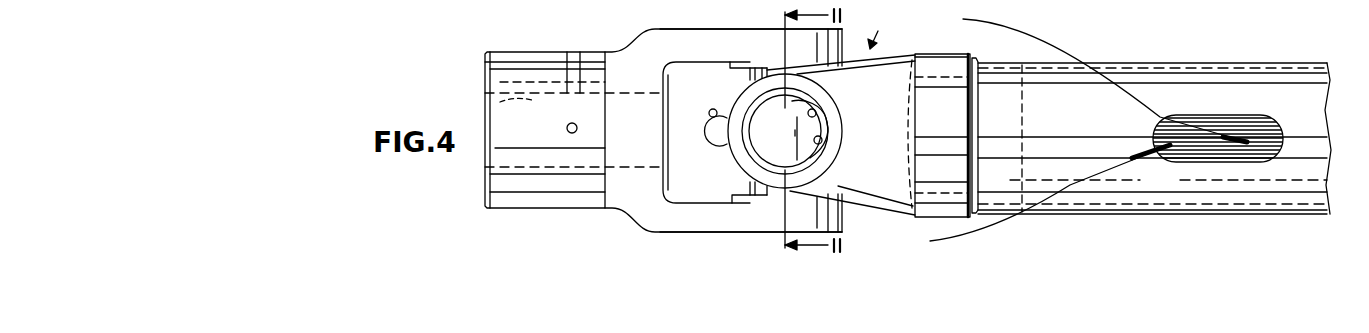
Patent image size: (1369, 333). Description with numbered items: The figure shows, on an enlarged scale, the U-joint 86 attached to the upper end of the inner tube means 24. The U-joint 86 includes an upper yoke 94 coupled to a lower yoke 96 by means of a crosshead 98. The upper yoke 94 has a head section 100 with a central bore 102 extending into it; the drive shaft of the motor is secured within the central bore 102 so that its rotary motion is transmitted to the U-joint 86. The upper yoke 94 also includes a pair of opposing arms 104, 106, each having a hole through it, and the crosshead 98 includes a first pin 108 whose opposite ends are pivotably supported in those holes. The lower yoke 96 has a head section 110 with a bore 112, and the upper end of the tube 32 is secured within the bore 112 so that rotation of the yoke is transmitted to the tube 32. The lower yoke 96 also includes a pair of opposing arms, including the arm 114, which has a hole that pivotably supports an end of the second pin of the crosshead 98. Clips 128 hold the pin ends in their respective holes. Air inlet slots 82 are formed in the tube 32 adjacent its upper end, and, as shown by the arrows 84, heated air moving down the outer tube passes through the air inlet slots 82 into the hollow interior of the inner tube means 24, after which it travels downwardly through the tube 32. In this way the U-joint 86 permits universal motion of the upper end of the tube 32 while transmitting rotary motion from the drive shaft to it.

The inner tube means 24 is at (1221, 66).
The tube 32 is at (1290, 78).
The air inlet slots 82 is at (1245, 125).
The arrows 84 is at (1077, 62).
The U-joint 86 is at (880, 30).
The upper yoke 94 is at (626, 218).
The lower yoke 96 is at (902, 59).
The crosshead 98 is at (788, 143).
The head section 100 is at (528, 60).
The central bore 102 is at (500, 102).
The arm 104 is at (741, 37).
The arm 106 is at (729, 233).
The first pin 108 is at (750, 79).
The head section 110 is at (953, 57).
The bore 112 is at (981, 72).
The arm 114 is at (838, 160).
The clips 128 is at (842, 128).